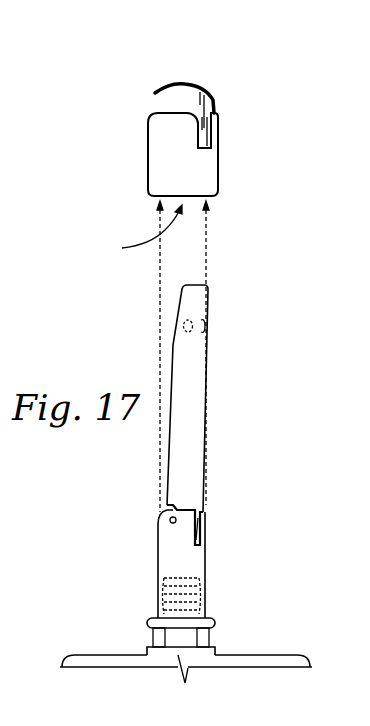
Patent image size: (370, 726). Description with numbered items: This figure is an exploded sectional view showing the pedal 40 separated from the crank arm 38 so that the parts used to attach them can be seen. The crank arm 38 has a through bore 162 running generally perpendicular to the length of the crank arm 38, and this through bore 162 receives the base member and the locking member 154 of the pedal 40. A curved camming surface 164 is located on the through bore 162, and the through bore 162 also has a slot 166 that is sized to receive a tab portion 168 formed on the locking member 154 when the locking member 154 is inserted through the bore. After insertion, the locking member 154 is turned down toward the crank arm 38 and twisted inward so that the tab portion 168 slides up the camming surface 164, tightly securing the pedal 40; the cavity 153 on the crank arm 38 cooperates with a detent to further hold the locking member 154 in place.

The crank arm 38 is at (158, 150).
The camming surface 164 is at (192, 130).
The slot 166 is at (212, 100).
The through bore 162 is at (145, 356).
The cavity 153 is at (183, 326).
The locking member 154 is at (193, 398).
The tab portion 168 is at (207, 533).
The pedal 40 is at (116, 643).